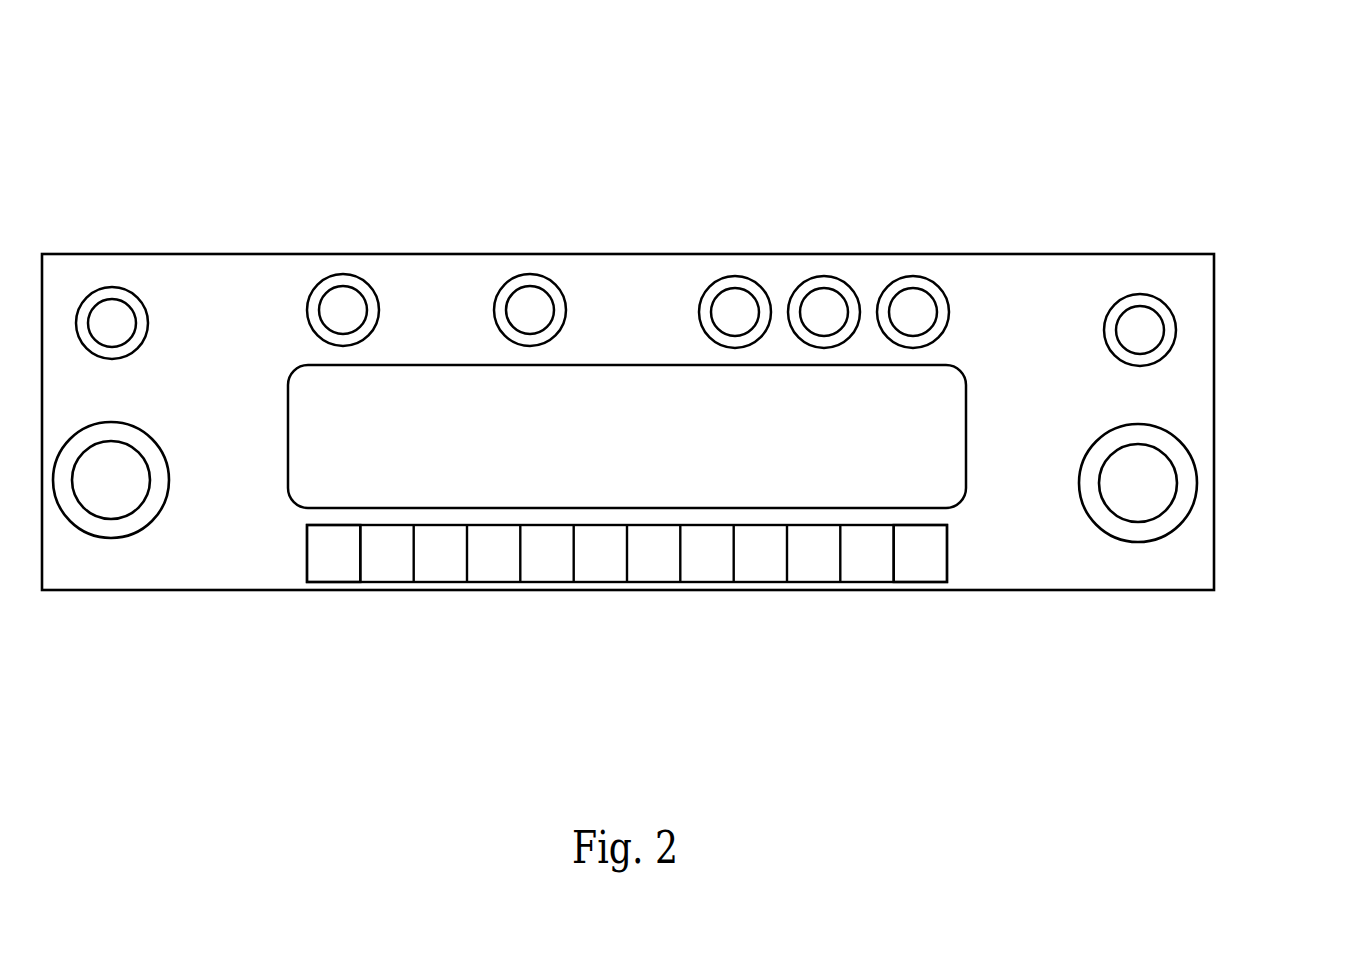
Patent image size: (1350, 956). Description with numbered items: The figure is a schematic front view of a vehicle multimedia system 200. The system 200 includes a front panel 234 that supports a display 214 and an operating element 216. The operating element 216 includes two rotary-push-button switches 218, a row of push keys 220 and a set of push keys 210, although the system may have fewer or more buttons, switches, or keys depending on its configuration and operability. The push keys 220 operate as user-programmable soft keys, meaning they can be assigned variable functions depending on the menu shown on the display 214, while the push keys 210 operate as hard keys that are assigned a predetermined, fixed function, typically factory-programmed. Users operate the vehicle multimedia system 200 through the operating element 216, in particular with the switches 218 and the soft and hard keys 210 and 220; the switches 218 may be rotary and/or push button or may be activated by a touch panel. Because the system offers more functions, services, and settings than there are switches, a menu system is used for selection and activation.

The vehicle multimedia system 200 is at (878, 127).
The push keys 210 is at (95, 293).
The display 214 is at (663, 383).
The operating element 216 is at (522, 597).
The rotary-push-button switches 218 is at (125, 497).
The push keys 220 is at (302, 570).
The front panel 234 is at (1214, 592).